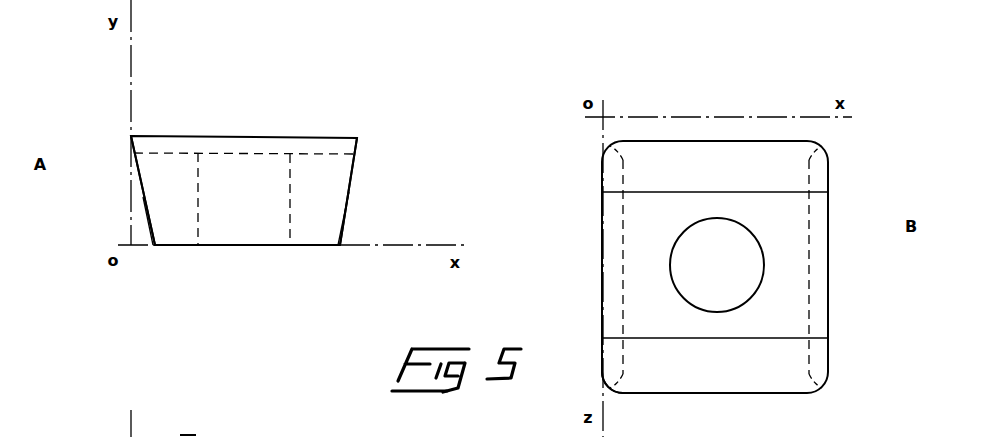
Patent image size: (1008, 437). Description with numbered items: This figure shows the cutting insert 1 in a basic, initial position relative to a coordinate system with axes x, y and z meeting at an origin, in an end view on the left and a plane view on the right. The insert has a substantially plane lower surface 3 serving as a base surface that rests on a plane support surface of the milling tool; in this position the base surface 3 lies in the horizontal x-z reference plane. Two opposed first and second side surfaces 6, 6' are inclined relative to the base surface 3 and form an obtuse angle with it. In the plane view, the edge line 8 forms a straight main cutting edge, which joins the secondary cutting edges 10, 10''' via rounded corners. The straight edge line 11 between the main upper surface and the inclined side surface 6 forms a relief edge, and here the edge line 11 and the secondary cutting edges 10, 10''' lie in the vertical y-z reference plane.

The cutting insert 1 is at (361, 127).
The first side surface 6 is at (119, 190).
The second side surface 6' is at (371, 191).
The lower surface 3 is at (243, 246).
The edge line 8 is at (746, 141).
The secondary cutting edge 10 is at (578, 176).
The edge line 11 is at (602, 272).
The secondary cutting edge 10''' is at (583, 365).